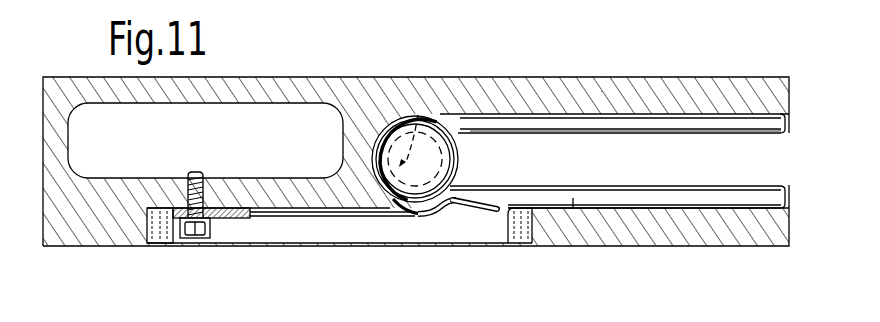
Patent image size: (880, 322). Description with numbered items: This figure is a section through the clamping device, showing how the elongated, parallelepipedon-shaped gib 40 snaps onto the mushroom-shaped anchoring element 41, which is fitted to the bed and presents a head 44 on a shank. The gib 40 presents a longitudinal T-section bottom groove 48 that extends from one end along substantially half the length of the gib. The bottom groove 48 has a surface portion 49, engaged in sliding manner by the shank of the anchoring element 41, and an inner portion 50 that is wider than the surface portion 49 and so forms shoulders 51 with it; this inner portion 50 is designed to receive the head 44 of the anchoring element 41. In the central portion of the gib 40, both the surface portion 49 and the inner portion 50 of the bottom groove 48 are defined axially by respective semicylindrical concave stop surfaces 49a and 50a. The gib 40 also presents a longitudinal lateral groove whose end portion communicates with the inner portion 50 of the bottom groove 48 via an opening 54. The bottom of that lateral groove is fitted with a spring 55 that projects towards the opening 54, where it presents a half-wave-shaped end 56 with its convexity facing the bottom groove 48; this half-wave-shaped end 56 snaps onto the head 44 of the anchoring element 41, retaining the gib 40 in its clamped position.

The gib 40 is at (63, 220).
The anchoring element 41 is at (463, 146).
The head 44 is at (427, 214).
The bottom groove 48 is at (548, 160).
The surface portion 49 is at (636, 136).
The semicylindrical concave stop surface 49a is at (418, 115).
The inner portion 50 is at (667, 197).
The semicylindrical concave stop surface 50a is at (378, 156).
The shoulders 51 is at (598, 129).
The opening 54 is at (403, 215).
The spring 55 is at (323, 226).
The half-wave-shaped end 56 is at (470, 210).